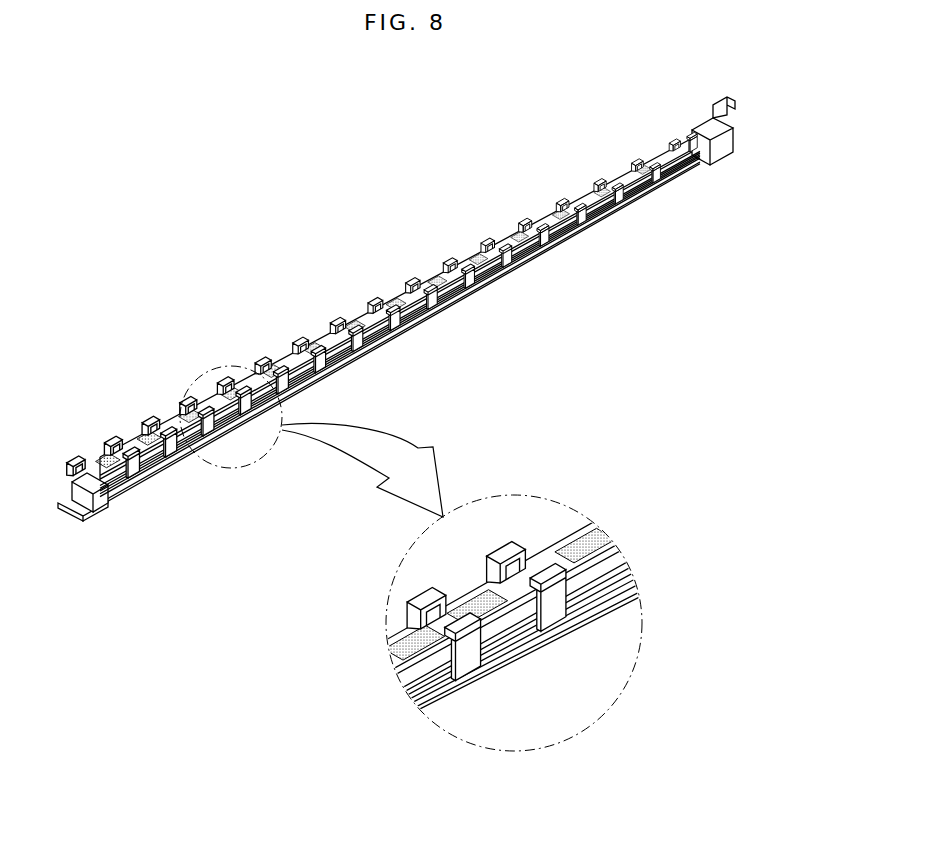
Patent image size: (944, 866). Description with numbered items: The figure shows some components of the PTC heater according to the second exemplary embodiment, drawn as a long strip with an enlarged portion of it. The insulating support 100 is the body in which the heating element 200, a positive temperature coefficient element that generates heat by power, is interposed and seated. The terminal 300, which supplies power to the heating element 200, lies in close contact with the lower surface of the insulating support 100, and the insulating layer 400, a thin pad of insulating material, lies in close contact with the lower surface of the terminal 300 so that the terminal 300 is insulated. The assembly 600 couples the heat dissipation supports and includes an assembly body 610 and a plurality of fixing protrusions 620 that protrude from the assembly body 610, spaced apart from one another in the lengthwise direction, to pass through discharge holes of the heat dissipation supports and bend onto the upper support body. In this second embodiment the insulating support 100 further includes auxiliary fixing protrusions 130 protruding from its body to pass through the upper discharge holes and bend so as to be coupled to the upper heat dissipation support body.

The insulating support 100 is at (538, 218).
The auxiliary fixing protrusions 130 is at (559, 245).
The heating element 200 is at (514, 224).
The terminal 300 is at (412, 686).
The insulating layer 400 is at (403, 707).
The assembly 600 is at (374, 495).
The assembly body 610 is at (528, 260).
The fixing protrusion 620 is at (491, 282).